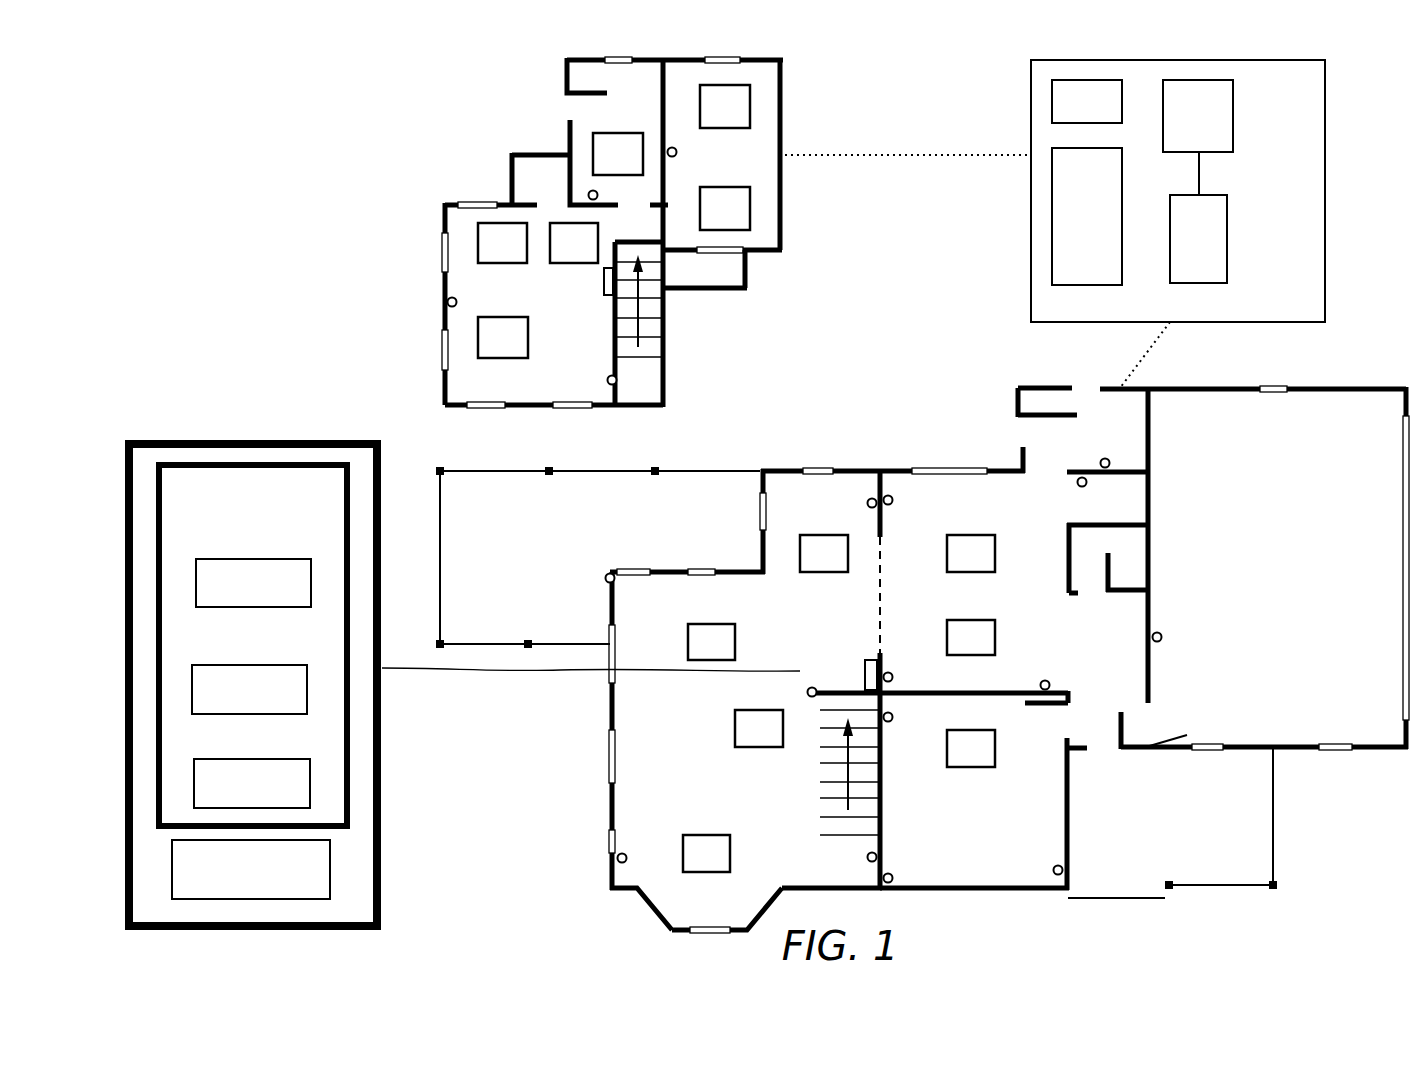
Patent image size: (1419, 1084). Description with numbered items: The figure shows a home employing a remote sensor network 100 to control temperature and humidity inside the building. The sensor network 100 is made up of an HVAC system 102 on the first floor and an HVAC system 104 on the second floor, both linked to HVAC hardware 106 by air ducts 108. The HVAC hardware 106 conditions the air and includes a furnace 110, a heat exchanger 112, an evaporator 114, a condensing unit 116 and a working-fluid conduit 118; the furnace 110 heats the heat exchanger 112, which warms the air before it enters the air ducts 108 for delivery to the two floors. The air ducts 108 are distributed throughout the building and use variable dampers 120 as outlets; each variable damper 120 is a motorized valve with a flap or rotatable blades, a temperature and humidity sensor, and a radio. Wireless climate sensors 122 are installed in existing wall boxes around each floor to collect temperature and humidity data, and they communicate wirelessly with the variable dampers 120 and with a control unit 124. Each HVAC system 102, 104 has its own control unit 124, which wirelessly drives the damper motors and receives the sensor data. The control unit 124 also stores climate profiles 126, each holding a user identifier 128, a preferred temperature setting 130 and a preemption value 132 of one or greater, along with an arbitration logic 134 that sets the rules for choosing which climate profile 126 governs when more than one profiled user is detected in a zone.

The remote sensor network 100 is at (240, 65).
The HVAC system 102 is at (560, 699).
The HVAC system 104 is at (405, 298).
The HVAC hardware 106 is at (1326, 160).
The air ducts 108 is at (900, 157).
The furnace 110 is at (1087, 216).
The heat exchanger 112 is at (675, 156).
The evaporator 114 is at (1198, 239).
The condensing unit 116 is at (1198, 116).
The working-fluid conduit 118 is at (1201, 172).
The variable damper 120 is at (736, 478).
The wireless climate sensor 122 is at (596, 191).
The control unit 124 is at (603, 281).
The climate profile 126 is at (464, 685).
The user identifier 128 is at (252, 558).
The preferred temperature setting 130 is at (252, 664).
The preemption value 132 is at (252, 758).
The arbitration logic 134 is at (251, 869).